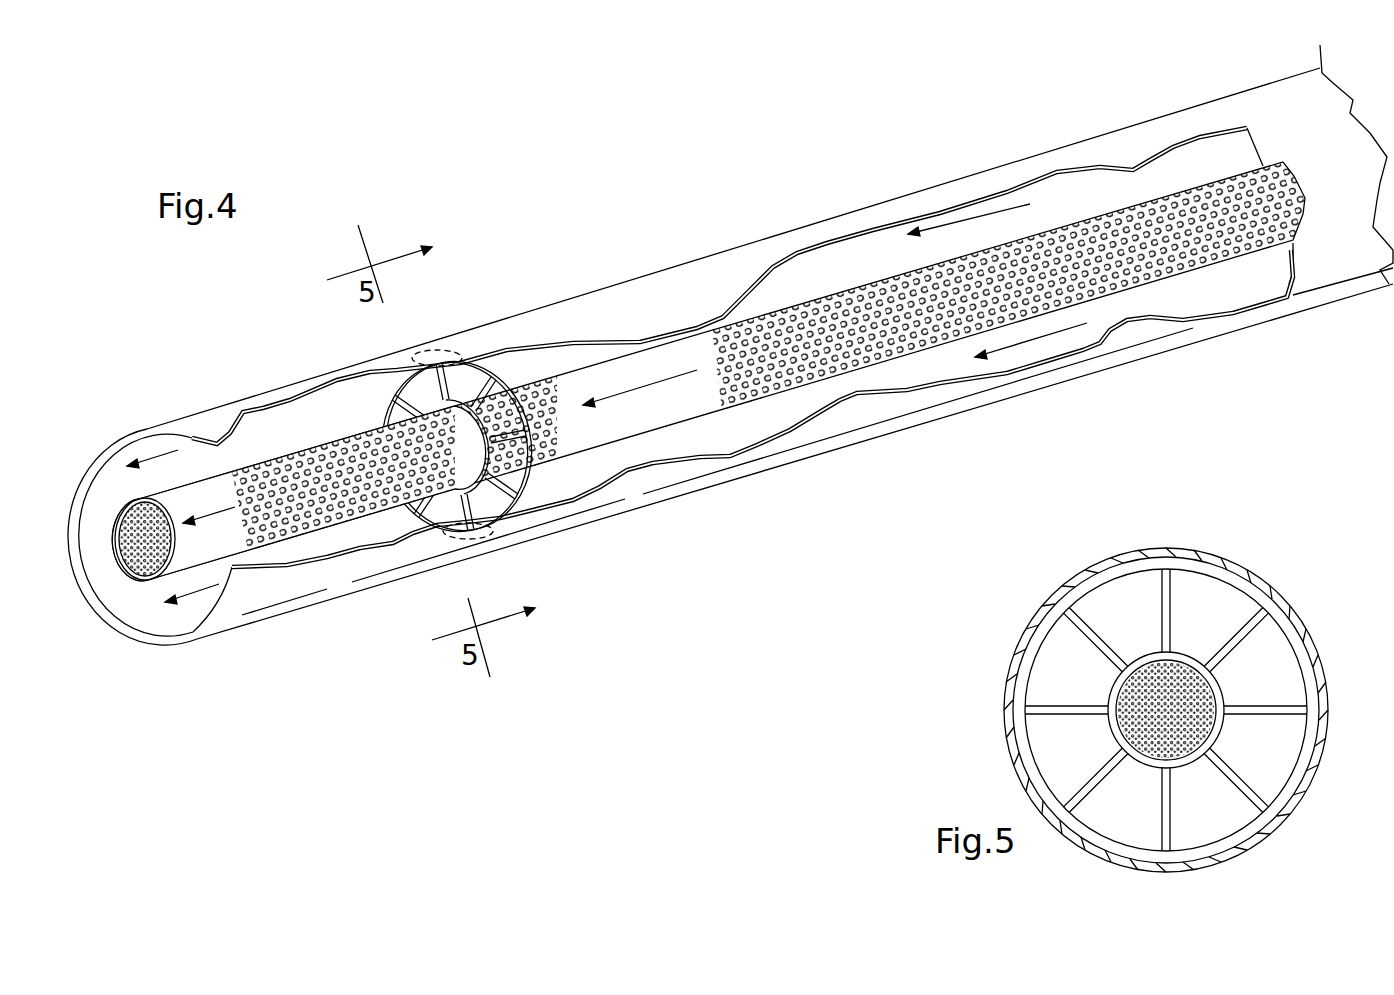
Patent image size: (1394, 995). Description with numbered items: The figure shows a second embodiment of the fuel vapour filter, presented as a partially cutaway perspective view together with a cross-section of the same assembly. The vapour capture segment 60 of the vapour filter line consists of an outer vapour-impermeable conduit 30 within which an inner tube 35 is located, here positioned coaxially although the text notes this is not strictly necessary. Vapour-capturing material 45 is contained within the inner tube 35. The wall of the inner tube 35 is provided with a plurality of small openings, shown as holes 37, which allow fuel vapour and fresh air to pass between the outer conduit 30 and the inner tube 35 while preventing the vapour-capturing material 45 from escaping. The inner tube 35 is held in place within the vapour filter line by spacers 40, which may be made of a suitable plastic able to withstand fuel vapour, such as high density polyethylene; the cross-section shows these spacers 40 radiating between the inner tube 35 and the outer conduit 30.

In FIG. 4, the outer vapour-impermeable conduit 30 is at (680, 497).
In FIG. 5, the outer vapour-impermeable conduit 30 is at (1208, 548).
In FIG. 4, the inner tube 35 is at (686, 371).
In FIG. 5, the inner tube 35 is at (1108, 707).
In FIG. 4, the holes 37 is at (832, 380).
In FIG. 5, the holes 37 is at (1222, 698).
In FIG. 5, the spacers 40 is at (1082, 638).
In FIG. 4, the vapour-capturing material 45 is at (115, 512).
In FIG. 5, the vapour-capturing material 45 is at (1123, 733).
In FIG. 4, the vapour capture segment 60 is at (958, 180).